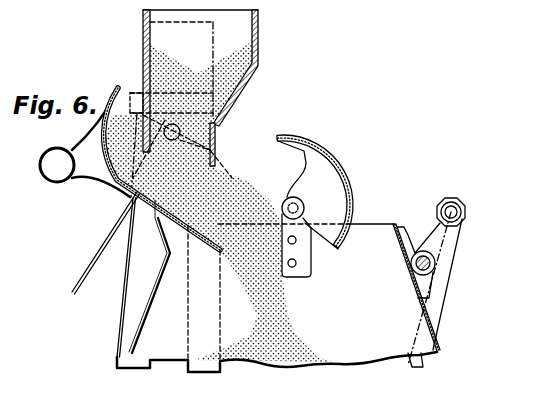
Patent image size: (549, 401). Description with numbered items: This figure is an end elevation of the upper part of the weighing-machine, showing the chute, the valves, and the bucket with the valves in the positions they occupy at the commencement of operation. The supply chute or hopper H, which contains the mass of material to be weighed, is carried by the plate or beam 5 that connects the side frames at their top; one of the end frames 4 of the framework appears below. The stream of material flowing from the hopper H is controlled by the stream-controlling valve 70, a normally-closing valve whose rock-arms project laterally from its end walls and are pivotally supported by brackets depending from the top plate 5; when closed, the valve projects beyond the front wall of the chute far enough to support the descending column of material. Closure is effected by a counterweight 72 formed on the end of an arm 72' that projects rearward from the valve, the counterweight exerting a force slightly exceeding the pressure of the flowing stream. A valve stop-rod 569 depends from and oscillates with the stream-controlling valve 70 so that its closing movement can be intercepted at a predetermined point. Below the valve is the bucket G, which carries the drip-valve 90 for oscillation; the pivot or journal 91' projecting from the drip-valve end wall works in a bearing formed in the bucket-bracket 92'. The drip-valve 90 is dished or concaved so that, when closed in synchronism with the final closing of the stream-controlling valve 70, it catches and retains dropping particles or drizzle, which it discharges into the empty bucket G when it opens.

The supply chute or hopper H is at (260, 41).
The plate or beam 5 is at (236, 102).
The stream-controlling valve 70 is at (193, 146).
The counterweight 72 is at (57, 178).
The arm 72' is at (146, 169).
The valve stop-rod 569 is at (100, 247).
The end frame 4 is at (128, 302).
The bucket G is at (329, 287).
The drip-valve 90 is at (347, 182).
The pivot or journal 91' is at (310, 206).
The bucket-bracket 92' is at (314, 245).